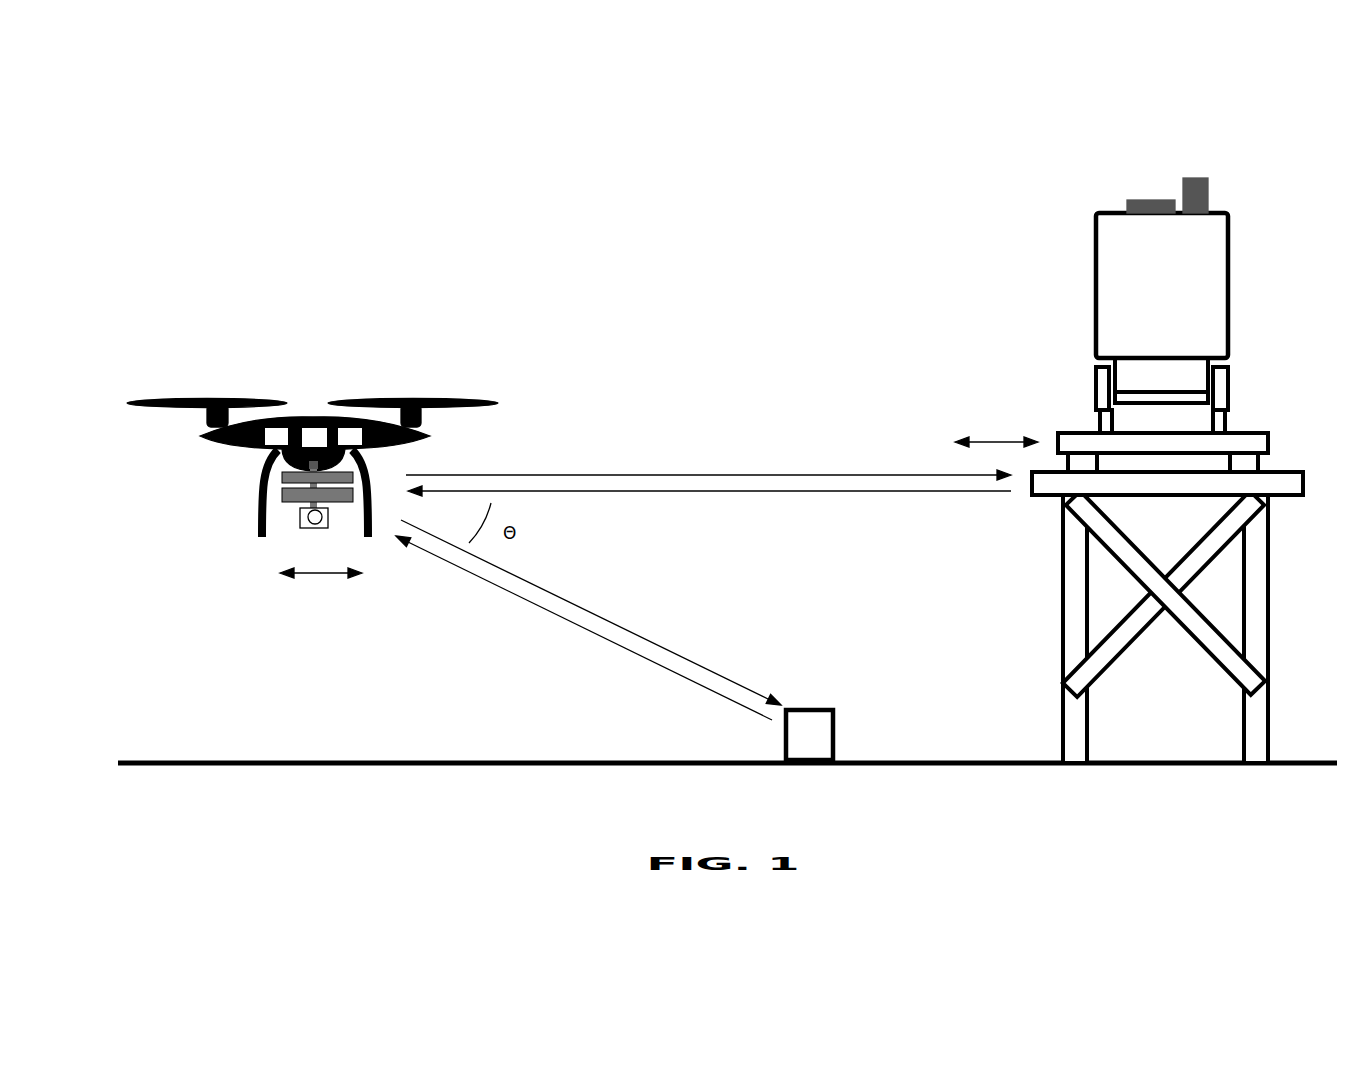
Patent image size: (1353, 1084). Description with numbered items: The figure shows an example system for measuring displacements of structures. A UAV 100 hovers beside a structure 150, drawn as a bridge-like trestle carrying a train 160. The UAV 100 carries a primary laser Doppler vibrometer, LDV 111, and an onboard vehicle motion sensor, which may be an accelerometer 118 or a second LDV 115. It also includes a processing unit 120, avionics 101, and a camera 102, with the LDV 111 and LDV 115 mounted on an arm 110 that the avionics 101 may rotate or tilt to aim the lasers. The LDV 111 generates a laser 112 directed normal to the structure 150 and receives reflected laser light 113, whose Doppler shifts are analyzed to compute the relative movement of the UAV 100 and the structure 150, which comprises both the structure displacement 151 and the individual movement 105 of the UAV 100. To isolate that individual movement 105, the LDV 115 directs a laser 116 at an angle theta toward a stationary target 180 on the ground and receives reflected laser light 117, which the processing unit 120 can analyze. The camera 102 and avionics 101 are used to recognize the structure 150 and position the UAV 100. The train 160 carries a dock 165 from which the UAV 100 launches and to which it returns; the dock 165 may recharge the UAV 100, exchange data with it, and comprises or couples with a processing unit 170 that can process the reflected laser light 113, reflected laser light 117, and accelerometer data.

The UAV 100 is at (347, 343).
The avionics 101 is at (350, 433).
The camera 102 is at (307, 527).
The individual movement 105 is at (317, 597).
The arm 110 is at (313, 467).
The laser Doppler vibrometer 111 is at (285, 478).
The laser 112 is at (708, 467).
The reflected laser light 113 is at (709, 500).
The second LDV 115 is at (285, 495).
The laser 116 is at (591, 612).
The reflected laser light 117 is at (584, 628).
The accelerometer 118 is at (268, 442).
The processing unit 120 is at (312, 433).
The structure 150 is at (1020, 565).
The displacement 151 is at (995, 419).
The train 160 is at (1162, 323).
The dock 165 is at (1140, 204).
The processing unit 170 is at (1198, 186).
The stationary target 180 is at (821, 733).